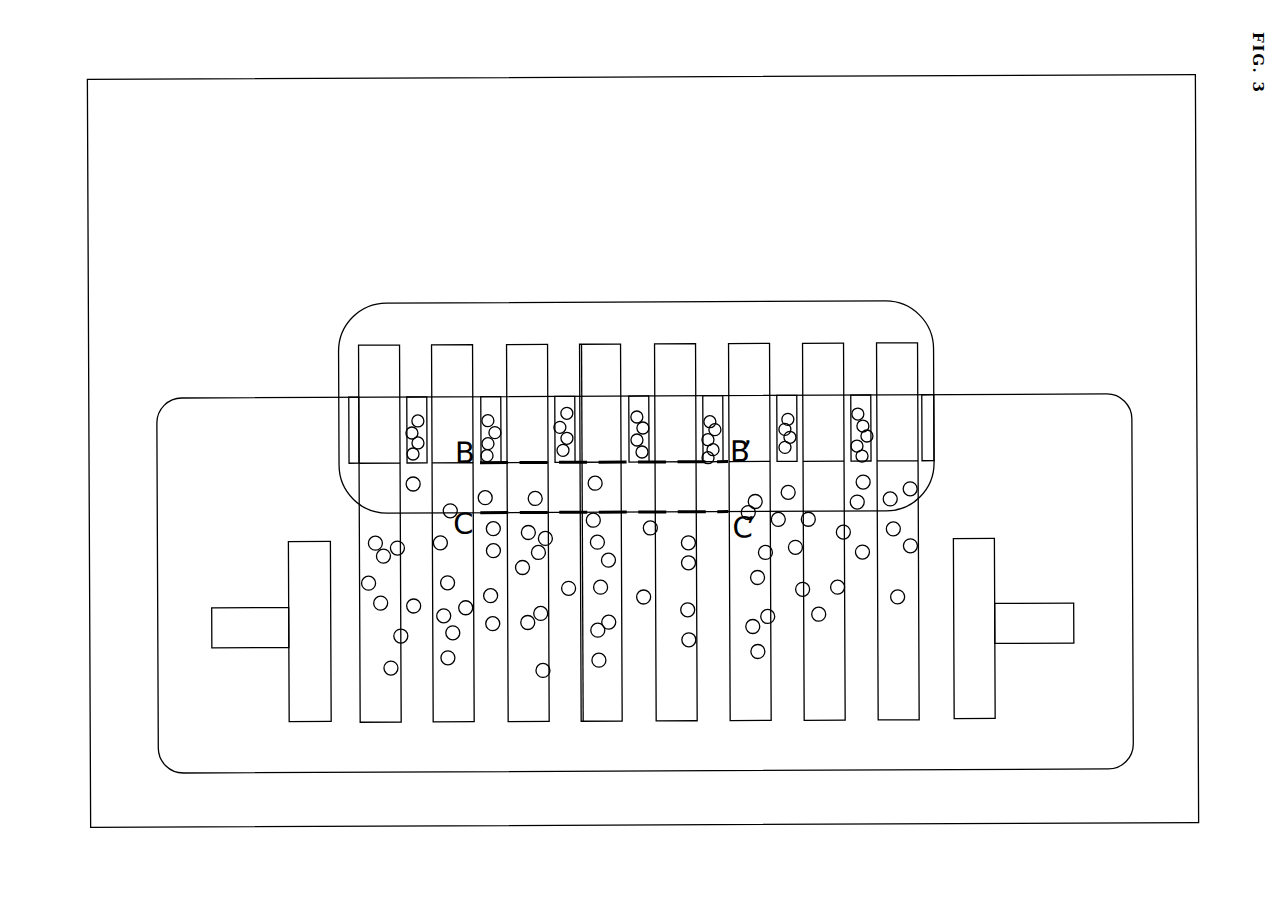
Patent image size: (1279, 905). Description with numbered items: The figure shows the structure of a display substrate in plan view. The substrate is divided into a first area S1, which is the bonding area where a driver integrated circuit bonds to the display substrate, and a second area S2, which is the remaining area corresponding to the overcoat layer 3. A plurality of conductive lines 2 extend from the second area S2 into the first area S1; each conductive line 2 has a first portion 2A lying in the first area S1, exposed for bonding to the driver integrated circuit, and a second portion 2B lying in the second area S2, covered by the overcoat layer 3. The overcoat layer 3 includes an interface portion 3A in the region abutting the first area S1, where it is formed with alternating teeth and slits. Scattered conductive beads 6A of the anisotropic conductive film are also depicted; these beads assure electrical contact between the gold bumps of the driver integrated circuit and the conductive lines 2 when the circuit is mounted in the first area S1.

The conductive lines 2 is at (608, 519).
The first portion 2A is at (300, 352).
The second portion 2B is at (302, 347).
The overcoat layer 3 is at (642, 451).
The interface portion 3A is at (664, 318).
The conductive beads 6A is at (788, 410).
The first area S1 is at (645, 583).
The second area S2 is at (666, 351).